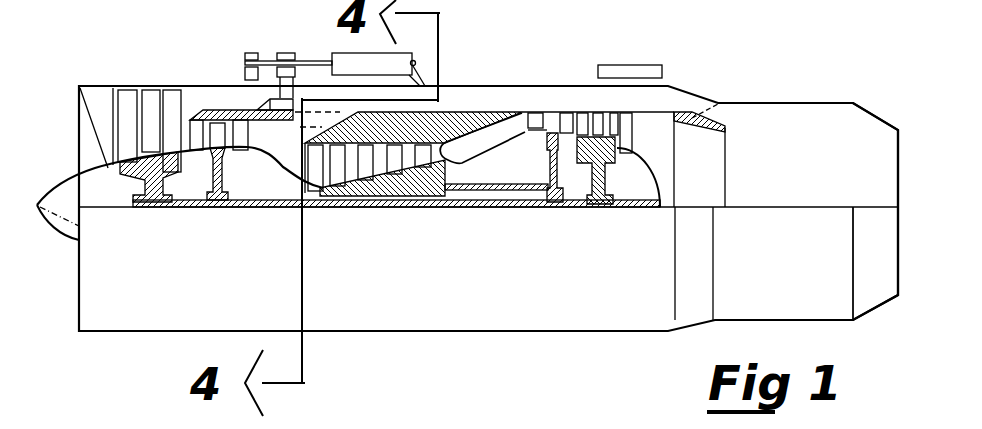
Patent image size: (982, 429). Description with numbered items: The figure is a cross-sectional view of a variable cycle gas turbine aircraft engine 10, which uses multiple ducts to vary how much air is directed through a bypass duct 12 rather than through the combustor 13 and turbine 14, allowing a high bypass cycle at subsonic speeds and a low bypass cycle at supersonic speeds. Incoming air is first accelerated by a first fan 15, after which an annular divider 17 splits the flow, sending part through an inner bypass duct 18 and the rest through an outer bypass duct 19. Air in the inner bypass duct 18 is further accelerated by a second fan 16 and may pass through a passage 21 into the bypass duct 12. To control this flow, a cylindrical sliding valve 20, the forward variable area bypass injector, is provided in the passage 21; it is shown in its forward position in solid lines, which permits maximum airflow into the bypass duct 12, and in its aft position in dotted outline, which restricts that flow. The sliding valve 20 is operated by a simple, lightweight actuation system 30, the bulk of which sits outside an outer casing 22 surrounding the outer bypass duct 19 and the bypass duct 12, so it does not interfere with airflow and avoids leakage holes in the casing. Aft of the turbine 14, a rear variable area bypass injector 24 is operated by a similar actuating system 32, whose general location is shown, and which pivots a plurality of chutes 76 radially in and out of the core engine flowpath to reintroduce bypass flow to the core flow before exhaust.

The variable cycle gas turbine aircraft engine 10 is at (398, 237).
The bypass duct 12 is at (520, 97).
The combustor 13 is at (487, 153).
The turbine 14 is at (568, 122).
The first fan 15 is at (152, 89).
The second fan 16 is at (196, 137).
The annular divider 17 is at (233, 122).
The inner bypass duct 18 is at (284, 155).
The outer bypass duct 19 is at (220, 97).
The cylindrical sliding valve 20 is at (270, 121).
The passage 21 is at (426, 154).
The outer casing 22 is at (185, 88).
The rear variable area bypass injector 24 is at (698, 97).
The actuation system 30 is at (290, 42).
The actuating system for the rear VABI 32 is at (625, 64).
The pivoting chutes 76 is at (806, 211).